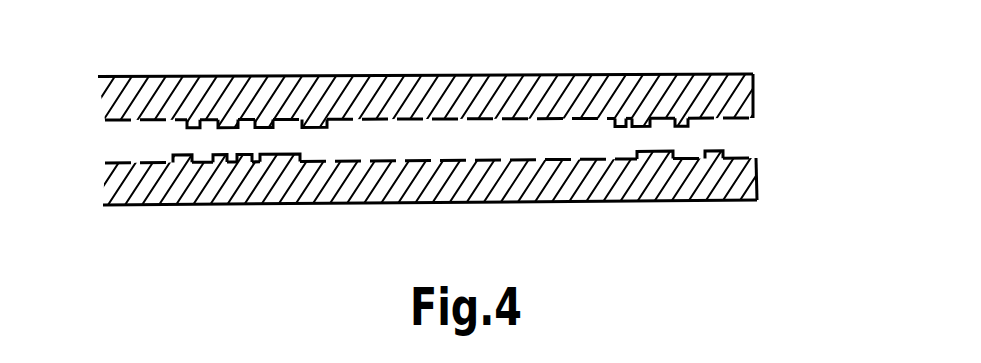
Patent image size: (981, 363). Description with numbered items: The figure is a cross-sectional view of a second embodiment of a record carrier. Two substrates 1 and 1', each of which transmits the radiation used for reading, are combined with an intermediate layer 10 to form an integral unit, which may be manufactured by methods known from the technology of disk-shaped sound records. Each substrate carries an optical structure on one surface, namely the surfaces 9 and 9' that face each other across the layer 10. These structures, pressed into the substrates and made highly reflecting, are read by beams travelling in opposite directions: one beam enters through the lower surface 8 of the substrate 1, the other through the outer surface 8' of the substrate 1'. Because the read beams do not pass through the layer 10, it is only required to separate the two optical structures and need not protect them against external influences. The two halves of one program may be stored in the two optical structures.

The carrier substrate 1 is at (437, 179).
The second substrate 1' is at (437, 100).
The lower surface of the substrate 8 is at (430, 228).
The outer surface of the second substrate 8' is at (425, 46).
The surface with optical structure 9 is at (486, 156).
The surface with optical structure of the second substrate 9' is at (496, 124).
The intermediate layer 10 is at (140, 140).